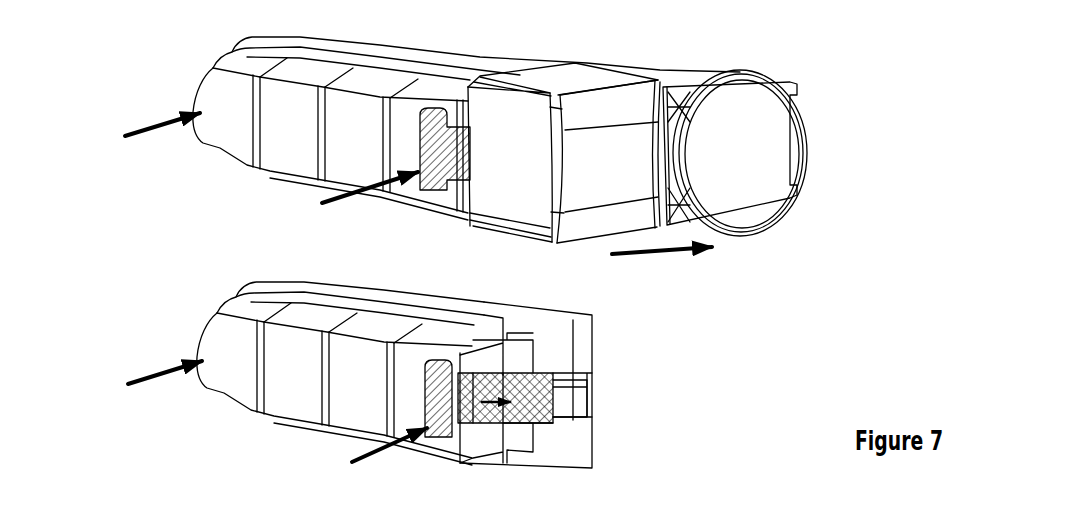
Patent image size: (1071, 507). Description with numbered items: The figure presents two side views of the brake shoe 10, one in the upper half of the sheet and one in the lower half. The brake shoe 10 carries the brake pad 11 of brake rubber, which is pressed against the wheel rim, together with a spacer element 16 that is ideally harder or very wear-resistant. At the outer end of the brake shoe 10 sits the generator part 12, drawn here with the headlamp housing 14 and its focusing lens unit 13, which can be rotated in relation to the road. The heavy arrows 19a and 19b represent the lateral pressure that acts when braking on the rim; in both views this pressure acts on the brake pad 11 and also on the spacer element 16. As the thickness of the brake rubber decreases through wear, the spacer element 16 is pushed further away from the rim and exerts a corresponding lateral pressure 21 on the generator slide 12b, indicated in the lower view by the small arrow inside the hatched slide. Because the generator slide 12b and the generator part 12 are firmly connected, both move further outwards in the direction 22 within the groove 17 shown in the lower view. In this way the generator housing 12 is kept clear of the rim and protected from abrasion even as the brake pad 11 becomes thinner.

The brake shoe 10 is at (258, 152).
The brake pad 11 is at (227, 310).
The generator part 12 is at (597, 63).
The generator slide 12b is at (540, 370).
The focusing lens unit 13 is at (806, 148).
The headlamp housing 14 is at (690, 74).
The spacer element 16 is at (440, 360).
The groove 17 is at (556, 376).
The lateral pressure 19a is at (115, 142).
The lateral pressure 19b is at (345, 463).
The lateral pressure 21 is at (540, 413).
The outward movement 22 is at (668, 255).